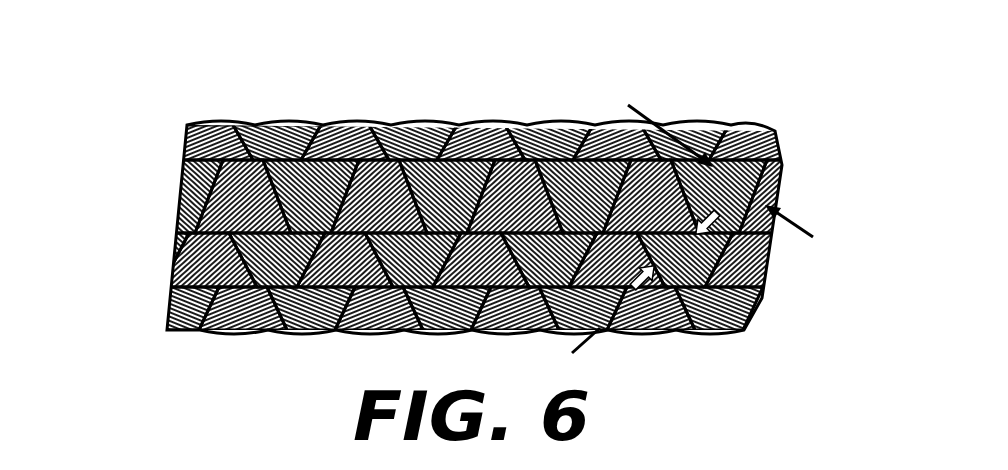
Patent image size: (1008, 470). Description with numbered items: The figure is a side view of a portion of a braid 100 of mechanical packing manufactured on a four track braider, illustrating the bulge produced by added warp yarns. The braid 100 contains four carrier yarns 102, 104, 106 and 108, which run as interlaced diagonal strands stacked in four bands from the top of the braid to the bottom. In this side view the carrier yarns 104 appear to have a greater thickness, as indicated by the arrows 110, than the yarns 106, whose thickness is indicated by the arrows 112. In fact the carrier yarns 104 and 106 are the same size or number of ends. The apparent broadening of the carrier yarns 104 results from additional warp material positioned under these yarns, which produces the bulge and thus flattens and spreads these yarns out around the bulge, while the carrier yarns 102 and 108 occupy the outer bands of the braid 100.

The braid 100 is at (501, 102).
The carrier yarn 102 is at (819, 123).
The carrier yarn 104 is at (190, 195).
The carrier yarn 106 is at (170, 258).
The carrier yarn 108 is at (840, 283).
The arrows 110 is at (650, 114).
The arrows 112 is at (766, 245).